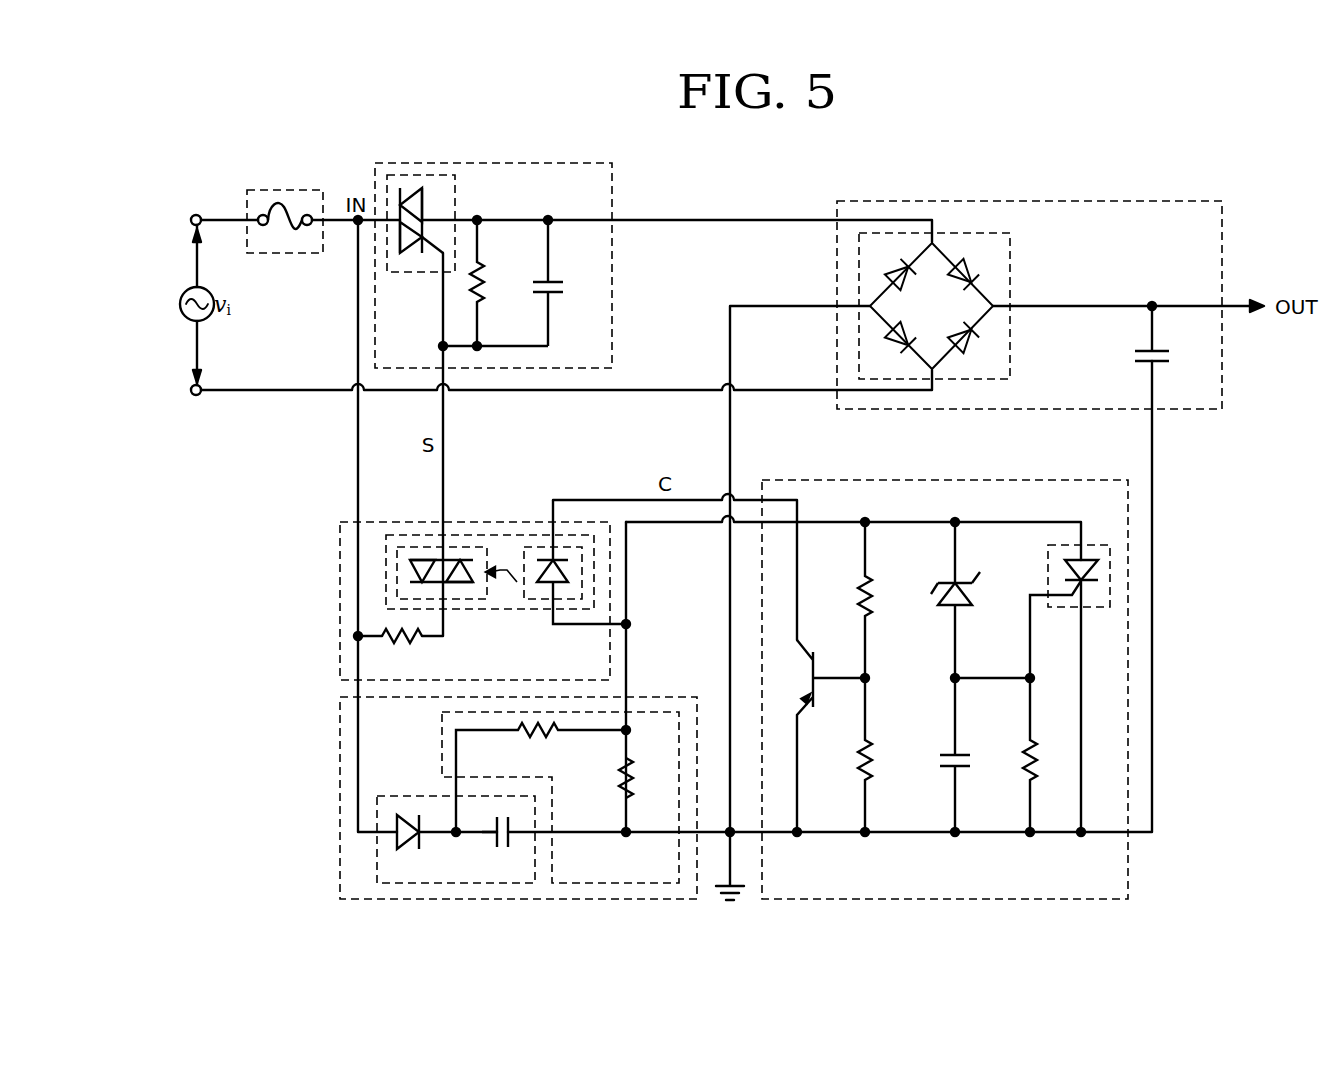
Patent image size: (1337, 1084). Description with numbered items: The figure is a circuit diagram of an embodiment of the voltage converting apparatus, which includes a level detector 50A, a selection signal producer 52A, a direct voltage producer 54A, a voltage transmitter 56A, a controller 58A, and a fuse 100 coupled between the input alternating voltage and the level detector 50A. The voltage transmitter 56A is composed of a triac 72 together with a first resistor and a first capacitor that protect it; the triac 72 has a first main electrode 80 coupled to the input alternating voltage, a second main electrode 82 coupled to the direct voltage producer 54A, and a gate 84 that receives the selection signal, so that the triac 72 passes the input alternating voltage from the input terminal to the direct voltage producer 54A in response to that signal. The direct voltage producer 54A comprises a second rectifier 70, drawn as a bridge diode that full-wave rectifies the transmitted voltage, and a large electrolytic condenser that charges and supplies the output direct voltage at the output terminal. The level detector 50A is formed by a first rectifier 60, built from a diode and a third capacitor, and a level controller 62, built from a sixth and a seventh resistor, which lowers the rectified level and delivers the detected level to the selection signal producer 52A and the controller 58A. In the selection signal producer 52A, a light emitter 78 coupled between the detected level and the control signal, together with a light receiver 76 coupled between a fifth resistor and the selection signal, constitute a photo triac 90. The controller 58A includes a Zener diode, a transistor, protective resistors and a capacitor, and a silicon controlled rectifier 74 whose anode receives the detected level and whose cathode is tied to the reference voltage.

The fuse 100 is at (272, 190).
The voltage transmitter 56A is at (535, 162).
The triac 72 is at (407, 174).
The first main electrode 80 is at (400, 205).
The second main electrode 82 is at (423, 220).
The gate 84 is at (437, 256).
The direct voltage producer 54A is at (1111, 201).
The second rectifier 70 is at (967, 232).
The selection signal producer 52A is at (341, 605).
The photo triac 90 is at (400, 535).
The light receiver 76 is at (463, 547).
The light emitter 78 is at (545, 547).
The level detector 50A is at (341, 798).
The first rectifier 60 is at (456, 884).
The level controller 62 is at (620, 884).
The controller 58A is at (1129, 701).
The silicon controlled rectifier 74 is at (1110, 574).